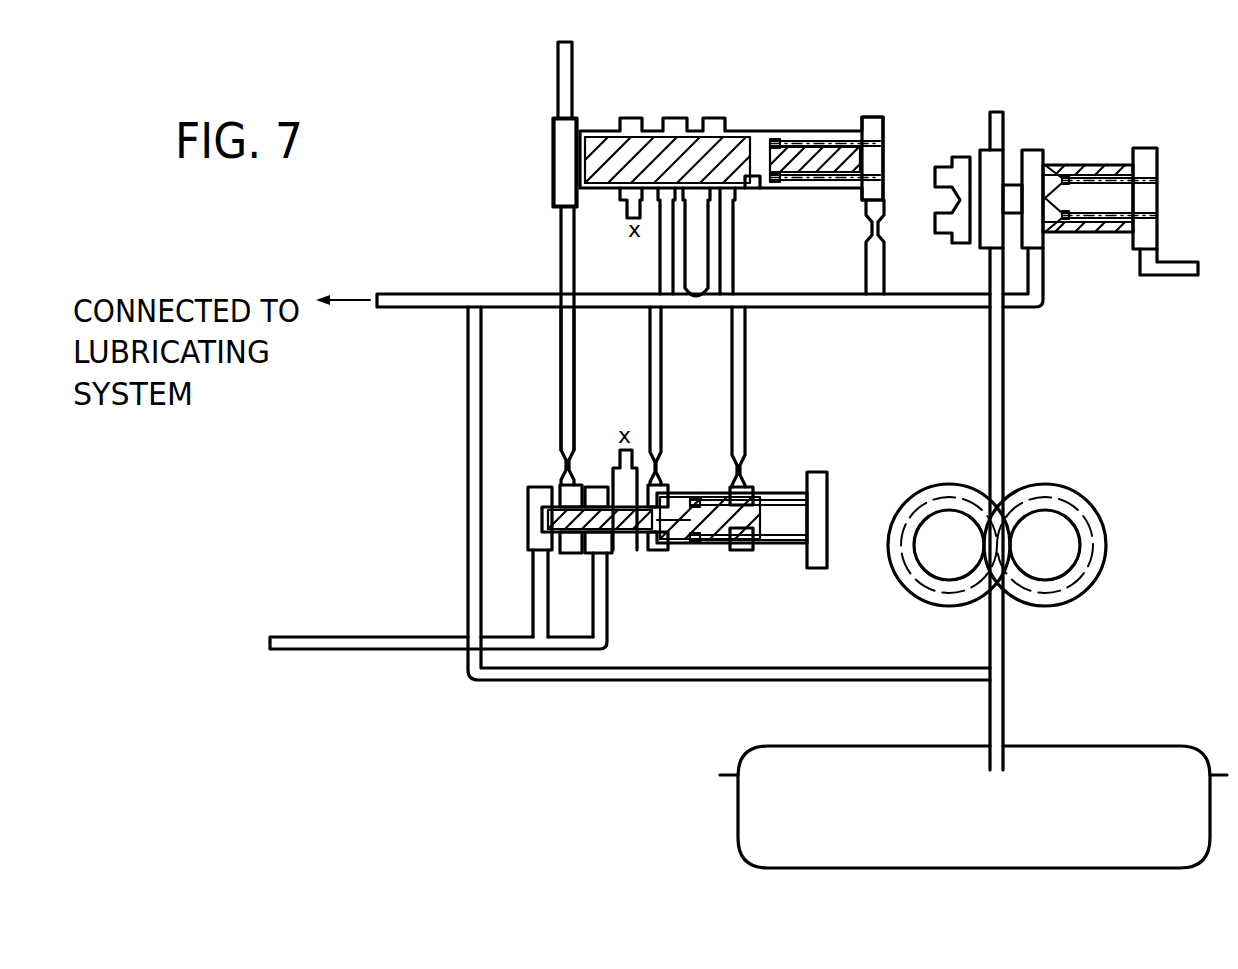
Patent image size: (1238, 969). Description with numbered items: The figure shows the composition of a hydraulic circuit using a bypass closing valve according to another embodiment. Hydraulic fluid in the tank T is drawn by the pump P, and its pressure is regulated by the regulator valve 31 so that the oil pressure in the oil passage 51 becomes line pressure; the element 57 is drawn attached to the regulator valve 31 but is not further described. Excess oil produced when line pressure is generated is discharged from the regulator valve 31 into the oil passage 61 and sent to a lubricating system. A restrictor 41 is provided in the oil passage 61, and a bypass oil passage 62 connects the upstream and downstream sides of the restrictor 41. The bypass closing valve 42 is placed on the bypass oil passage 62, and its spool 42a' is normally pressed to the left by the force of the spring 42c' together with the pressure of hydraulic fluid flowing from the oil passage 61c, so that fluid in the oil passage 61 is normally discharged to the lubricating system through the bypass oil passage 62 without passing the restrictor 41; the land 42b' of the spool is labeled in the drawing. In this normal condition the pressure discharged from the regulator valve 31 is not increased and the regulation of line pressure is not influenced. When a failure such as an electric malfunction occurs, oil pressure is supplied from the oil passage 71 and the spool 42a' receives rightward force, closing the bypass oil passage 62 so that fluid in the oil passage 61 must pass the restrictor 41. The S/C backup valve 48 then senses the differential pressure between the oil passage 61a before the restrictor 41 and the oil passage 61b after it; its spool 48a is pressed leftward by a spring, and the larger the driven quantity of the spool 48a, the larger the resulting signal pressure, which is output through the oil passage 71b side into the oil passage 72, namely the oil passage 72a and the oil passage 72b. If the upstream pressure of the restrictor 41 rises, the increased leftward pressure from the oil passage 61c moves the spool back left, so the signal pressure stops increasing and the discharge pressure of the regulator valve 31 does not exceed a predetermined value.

The oil passage 71 is at (558, 68).
The valve land 42b' is at (502, 165).
The oil passage 71b is at (562, 345).
The bypass closing valve 42 is at (700, 95).
The spool 42a' is at (791, 100).
The spring 42c' is at (910, 106).
The bypass oil passage 62 is at (660, 265).
The restrictor 41 is at (697, 300).
The oil passage 61c is at (868, 252).
The oil passage 61 is at (930, 307).
The oil passage 61b is at (662, 362).
The oil passage 61a is at (745, 368).
The oil passage 72 is at (310, 637).
The oil passage 72b is at (533, 580).
The oil passage 72a is at (607, 572).
The S/C backup valve 48 is at (800, 464).
The spool 48a is at (680, 540).
The oil passage 51 is at (1000, 118).
The regulator valve 31 is at (1131, 114).
The lever 57 is at (1180, 276).
The pump P is at (1095, 508).
The tank T is at (1108, 745).